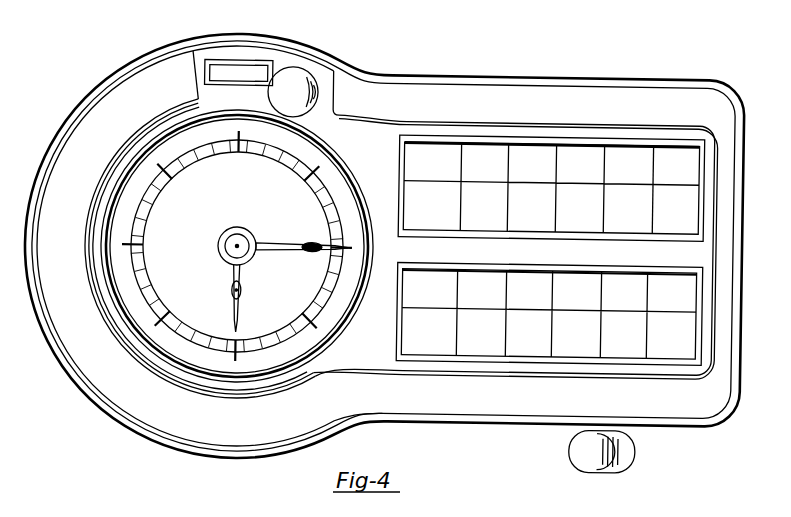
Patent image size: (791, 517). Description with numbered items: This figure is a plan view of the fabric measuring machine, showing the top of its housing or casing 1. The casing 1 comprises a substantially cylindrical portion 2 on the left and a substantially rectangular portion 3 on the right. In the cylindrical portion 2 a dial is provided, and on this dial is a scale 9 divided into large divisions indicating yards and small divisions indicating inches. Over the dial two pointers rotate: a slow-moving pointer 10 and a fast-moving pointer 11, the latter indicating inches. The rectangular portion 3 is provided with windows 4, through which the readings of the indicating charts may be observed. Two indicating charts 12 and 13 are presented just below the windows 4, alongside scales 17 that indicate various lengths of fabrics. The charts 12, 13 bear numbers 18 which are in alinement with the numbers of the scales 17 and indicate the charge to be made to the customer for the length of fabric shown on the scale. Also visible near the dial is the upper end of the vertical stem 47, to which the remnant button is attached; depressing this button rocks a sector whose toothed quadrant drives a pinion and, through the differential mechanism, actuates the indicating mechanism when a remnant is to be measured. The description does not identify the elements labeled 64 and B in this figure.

The housing or casing 1 is at (517, 421).
The cylindrical portion 2 is at (136, 425).
The rectangular portion 3 is at (653, 419).
The windows 4 is at (720, 245).
The scale 9 is at (332, 202).
The slow-moving pointer 10 is at (240, 266).
The fast-moving pointer 11 is at (278, 234).
The indicating chart 12 is at (699, 338).
The indicating chart 13 is at (687, 183).
The scales 17 is at (626, 142).
The numbers 18 is at (701, 196).
The vertical stem 47 is at (293, 91).
The window 64 is at (249, 67).
The dial bezel B is at (331, 172).